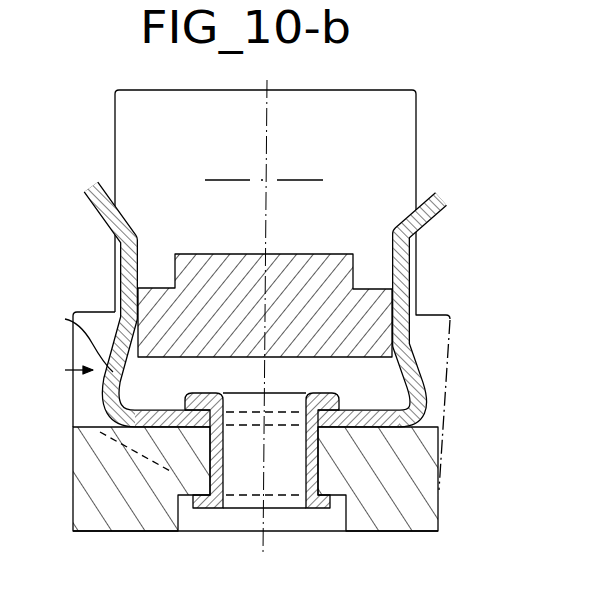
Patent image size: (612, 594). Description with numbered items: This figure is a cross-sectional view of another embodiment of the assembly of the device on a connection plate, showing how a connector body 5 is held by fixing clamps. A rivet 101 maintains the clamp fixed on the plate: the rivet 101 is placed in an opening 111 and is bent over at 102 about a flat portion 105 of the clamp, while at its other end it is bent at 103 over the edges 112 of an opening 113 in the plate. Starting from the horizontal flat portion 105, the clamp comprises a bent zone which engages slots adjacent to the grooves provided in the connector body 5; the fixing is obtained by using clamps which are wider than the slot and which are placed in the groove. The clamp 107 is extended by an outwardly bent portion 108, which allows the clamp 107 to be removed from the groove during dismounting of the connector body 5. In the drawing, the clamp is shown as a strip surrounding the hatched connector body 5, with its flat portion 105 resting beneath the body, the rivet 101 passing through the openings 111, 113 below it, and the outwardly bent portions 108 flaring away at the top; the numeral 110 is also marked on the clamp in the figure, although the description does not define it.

The connector body 5 is at (335, 253).
The rivet 101 is at (226, 441).
The bent-over portion of rivet 102 is at (197, 393).
The bent portion of rivet over opening edges 103 is at (208, 510).
The flat portion of clamp 105 is at (143, 410).
The clamp 107 is at (127, 259).
The outwardly bent portion 108 is at (94, 190).
The spring clip 110 is at (403, 396).
The opening 111 is at (273, 427).
The edges of opening 112 is at (337, 497).
The opening 113 is at (317, 517).